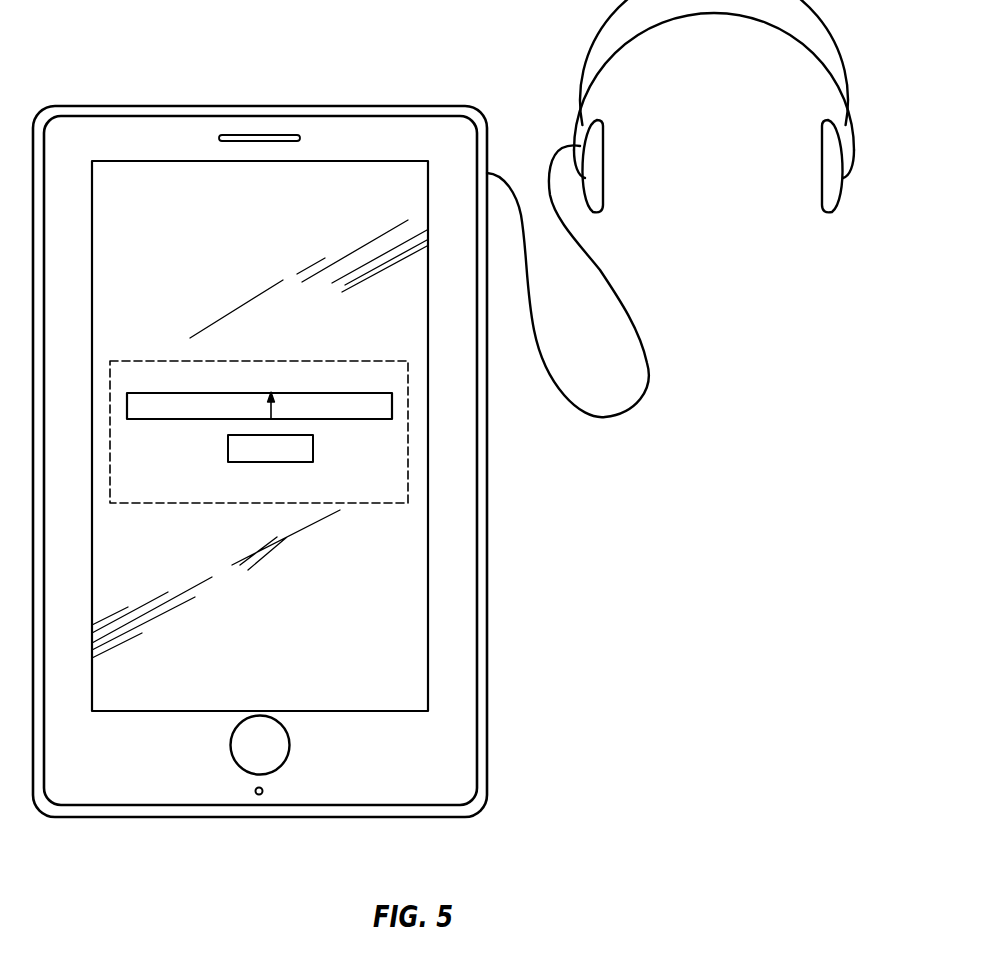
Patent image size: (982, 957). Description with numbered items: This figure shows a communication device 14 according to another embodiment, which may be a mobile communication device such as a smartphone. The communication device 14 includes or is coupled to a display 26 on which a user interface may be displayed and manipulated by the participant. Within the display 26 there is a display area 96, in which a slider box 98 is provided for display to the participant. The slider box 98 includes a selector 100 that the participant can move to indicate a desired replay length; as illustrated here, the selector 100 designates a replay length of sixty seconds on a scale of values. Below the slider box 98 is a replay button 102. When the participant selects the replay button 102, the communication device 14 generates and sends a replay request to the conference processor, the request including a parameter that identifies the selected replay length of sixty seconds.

The communication device 14 is at (487, 607).
The display 26 is at (428, 537).
The display area 96 is at (313, 361).
The slider box 98 is at (325, 408).
The selector 100 is at (267, 409).
The replay button 102 is at (313, 448).